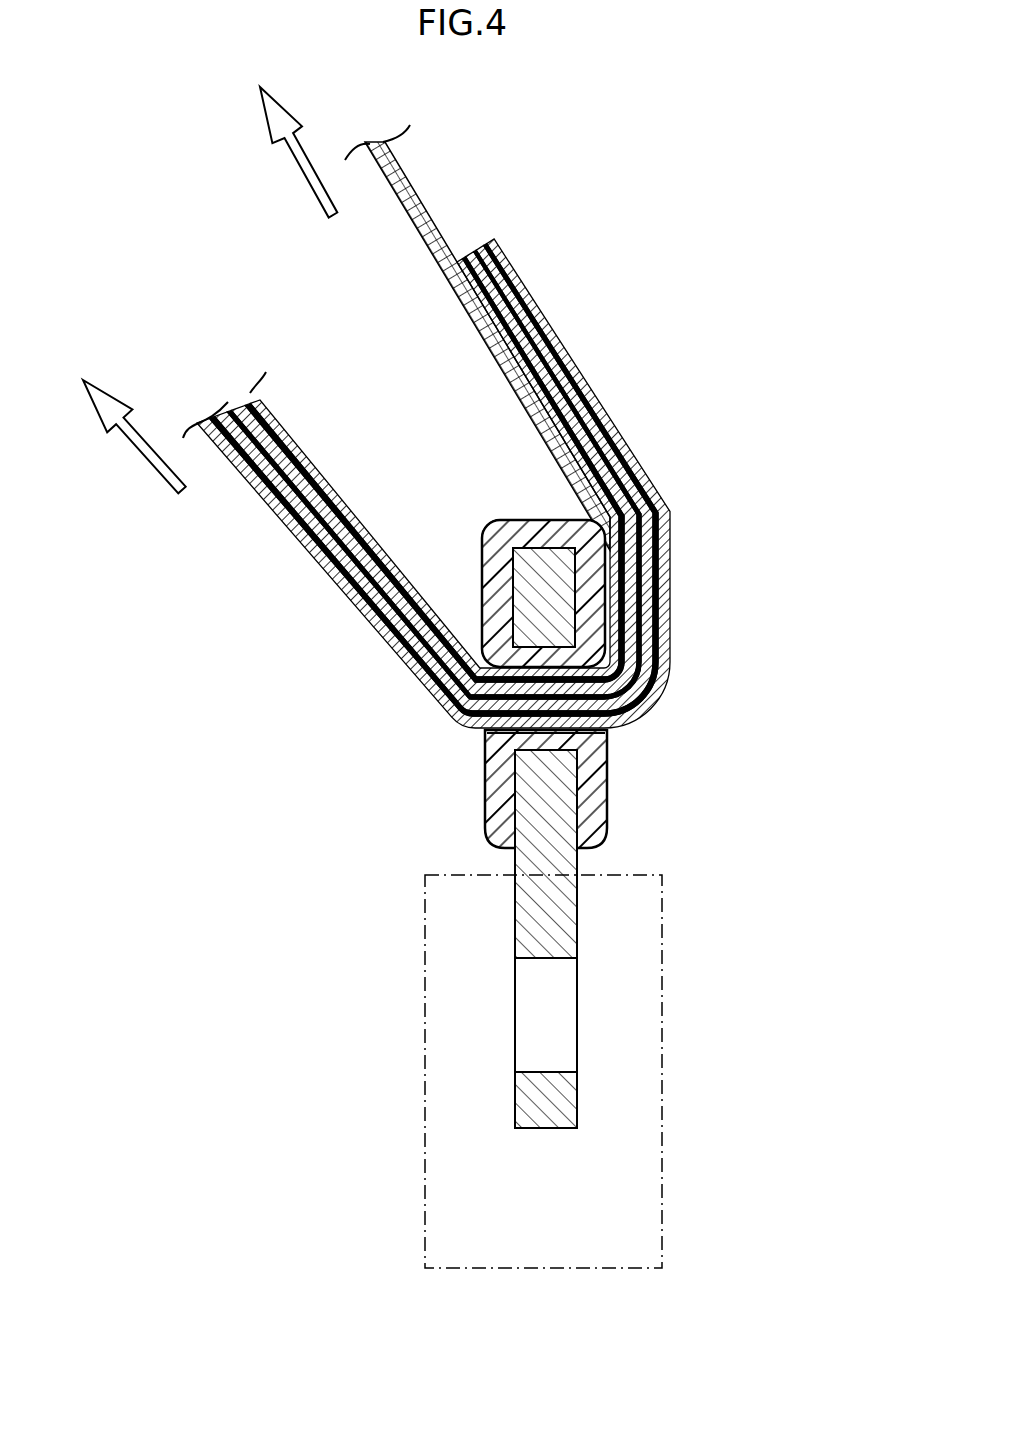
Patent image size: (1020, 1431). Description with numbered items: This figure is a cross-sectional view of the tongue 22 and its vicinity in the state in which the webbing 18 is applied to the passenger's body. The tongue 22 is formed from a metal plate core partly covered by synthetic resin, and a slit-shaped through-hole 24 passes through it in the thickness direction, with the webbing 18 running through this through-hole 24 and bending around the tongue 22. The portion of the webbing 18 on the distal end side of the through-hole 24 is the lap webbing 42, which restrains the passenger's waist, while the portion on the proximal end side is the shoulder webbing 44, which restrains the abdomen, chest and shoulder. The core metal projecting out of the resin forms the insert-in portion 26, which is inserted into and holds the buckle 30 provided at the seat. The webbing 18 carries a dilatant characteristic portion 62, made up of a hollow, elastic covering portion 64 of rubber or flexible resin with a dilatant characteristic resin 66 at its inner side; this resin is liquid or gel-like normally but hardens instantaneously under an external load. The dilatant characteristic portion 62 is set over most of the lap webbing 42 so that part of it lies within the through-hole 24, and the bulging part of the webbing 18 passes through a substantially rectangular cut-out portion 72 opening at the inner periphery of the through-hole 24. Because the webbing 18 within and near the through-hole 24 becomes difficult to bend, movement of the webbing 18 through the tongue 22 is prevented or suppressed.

The webbing 18 is at (415, 426).
The lap webbing 42 is at (415, 483).
The shoulder webbing 44 is at (420, 198).
The dilatant characteristic portion 62 is at (403, 573).
The covering portion 64 is at (327, 481).
The dilatant characteristic resin 66 is at (370, 562).
The through-hole 24 is at (613, 723).
The tongue 22 is at (604, 808).
The cut-out portion 72 is at (483, 735).
The insert-in portion 26 is at (575, 1112).
The buckle 30 is at (662, 1130).